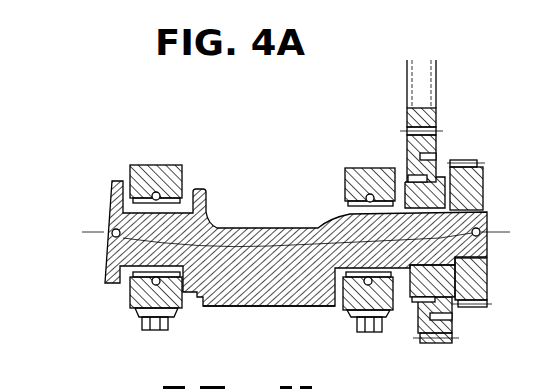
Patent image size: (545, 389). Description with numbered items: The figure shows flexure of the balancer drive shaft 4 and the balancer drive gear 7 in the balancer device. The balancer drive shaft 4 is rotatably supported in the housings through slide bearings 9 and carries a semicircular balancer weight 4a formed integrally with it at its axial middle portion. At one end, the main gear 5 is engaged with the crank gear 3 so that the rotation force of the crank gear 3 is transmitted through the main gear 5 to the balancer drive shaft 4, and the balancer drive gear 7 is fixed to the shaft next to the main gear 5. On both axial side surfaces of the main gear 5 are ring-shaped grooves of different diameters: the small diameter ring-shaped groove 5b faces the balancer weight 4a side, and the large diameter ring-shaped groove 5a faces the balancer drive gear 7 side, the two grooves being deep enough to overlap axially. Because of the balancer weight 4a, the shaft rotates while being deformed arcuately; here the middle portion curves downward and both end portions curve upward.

The crank gear 3 is at (432, 95).
The balancer drive shaft 4 is at (340, 218).
The balancer weight 4a is at (265, 303).
The main gear 5 is at (452, 334).
The large diameter ring-shaped groove 5a is at (433, 157).
The small diameter ring-shaped groove 5b is at (409, 176).
The balancer drive gear 7 is at (490, 273).
The slide bearings 9 is at (165, 164).